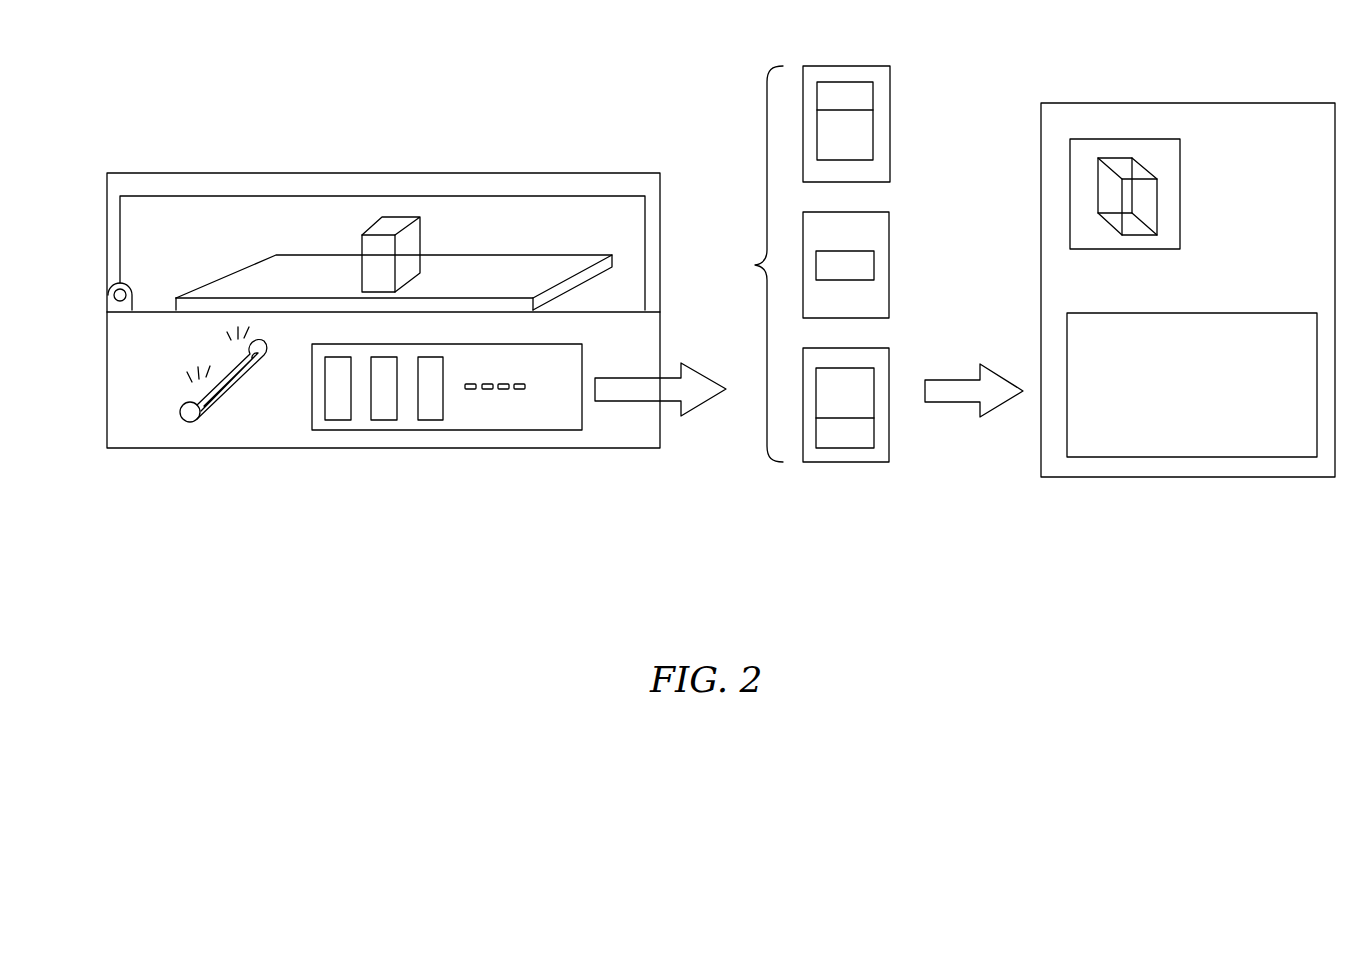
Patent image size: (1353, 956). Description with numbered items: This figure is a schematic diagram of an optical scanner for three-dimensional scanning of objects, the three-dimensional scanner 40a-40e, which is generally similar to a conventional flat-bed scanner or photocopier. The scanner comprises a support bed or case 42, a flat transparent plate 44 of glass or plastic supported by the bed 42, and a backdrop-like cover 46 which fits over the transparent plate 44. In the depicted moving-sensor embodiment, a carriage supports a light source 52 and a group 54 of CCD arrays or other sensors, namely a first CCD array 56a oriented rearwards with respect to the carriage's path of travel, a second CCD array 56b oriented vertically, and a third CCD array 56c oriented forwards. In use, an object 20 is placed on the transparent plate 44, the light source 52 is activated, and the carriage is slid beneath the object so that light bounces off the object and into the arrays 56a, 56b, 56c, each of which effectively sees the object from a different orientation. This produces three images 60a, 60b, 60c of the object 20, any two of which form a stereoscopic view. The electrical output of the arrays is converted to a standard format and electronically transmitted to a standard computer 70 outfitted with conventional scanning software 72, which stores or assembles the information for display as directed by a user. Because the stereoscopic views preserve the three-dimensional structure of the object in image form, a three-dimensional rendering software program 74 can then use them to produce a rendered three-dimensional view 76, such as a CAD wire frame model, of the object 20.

The object 20 is at (387, 222).
The support bed or case 42 is at (510, 449).
The transparent plate 44 is at (237, 284).
The cover 46 is at (612, 190).
The light source 52 is at (215, 413).
The group of CCD arrays 54 is at (468, 431).
The first CCD array 56a is at (330, 420).
The second CCD array 56b is at (383, 420).
The third CCD array 56c is at (429, 420).
The 3-D scanner 40a-40e is at (340, 535).
The image 60a is at (792, 154).
The image 60b is at (791, 265).
The image 60c is at (791, 373).
The computer 70 is at (1098, 478).
The scanning software 72 is at (1228, 458).
The three-dimensional rendering software program 74 is at (1140, 250).
The rendered 3-D view 76 is at (1155, 193).